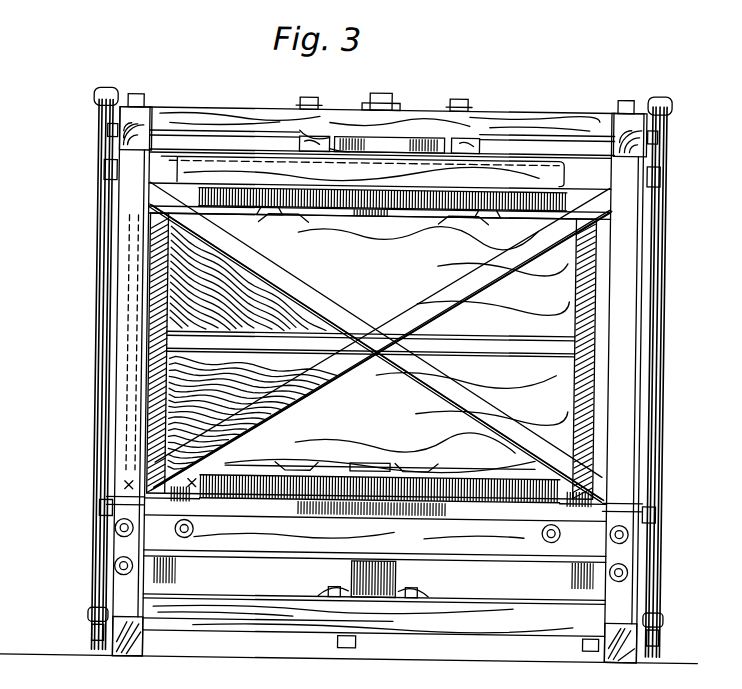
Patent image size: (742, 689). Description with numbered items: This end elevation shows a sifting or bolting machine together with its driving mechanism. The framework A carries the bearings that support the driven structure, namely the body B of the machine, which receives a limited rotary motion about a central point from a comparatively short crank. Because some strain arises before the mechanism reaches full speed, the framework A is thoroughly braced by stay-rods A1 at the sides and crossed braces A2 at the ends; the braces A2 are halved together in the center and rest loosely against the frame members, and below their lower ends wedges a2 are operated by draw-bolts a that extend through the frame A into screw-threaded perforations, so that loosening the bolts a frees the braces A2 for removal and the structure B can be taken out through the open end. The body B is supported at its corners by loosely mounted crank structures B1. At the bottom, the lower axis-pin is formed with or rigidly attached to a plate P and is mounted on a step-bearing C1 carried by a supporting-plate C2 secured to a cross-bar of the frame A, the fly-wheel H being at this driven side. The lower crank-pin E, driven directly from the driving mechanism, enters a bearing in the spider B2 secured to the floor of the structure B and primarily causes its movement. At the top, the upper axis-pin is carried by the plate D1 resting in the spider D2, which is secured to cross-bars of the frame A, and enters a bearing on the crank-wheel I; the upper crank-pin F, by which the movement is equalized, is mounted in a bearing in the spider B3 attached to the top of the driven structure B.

The framework A is at (518, 110).
The stay-rods A1 is at (100, 356).
The crossed braces A2 is at (336, 282).
The driven structure B is at (584, 396).
The crank structures B1 is at (312, 218).
The spider B2 is at (340, 468).
The spider B3 is at (396, 216).
The plate D1 is at (400, 98).
The spider D2 is at (342, 106).
The crank-wheel I is at (415, 133).
The crank-pin F is at (312, 128).
The crank-pin E is at (382, 468).
The fly-wheel H is at (310, 483).
The draw-bolts a is at (118, 501).
The wedges a2 is at (175, 506).
The plate P is at (338, 512).
The step-bearing C1 is at (406, 580).
The supporting-plate C2 is at (336, 588).